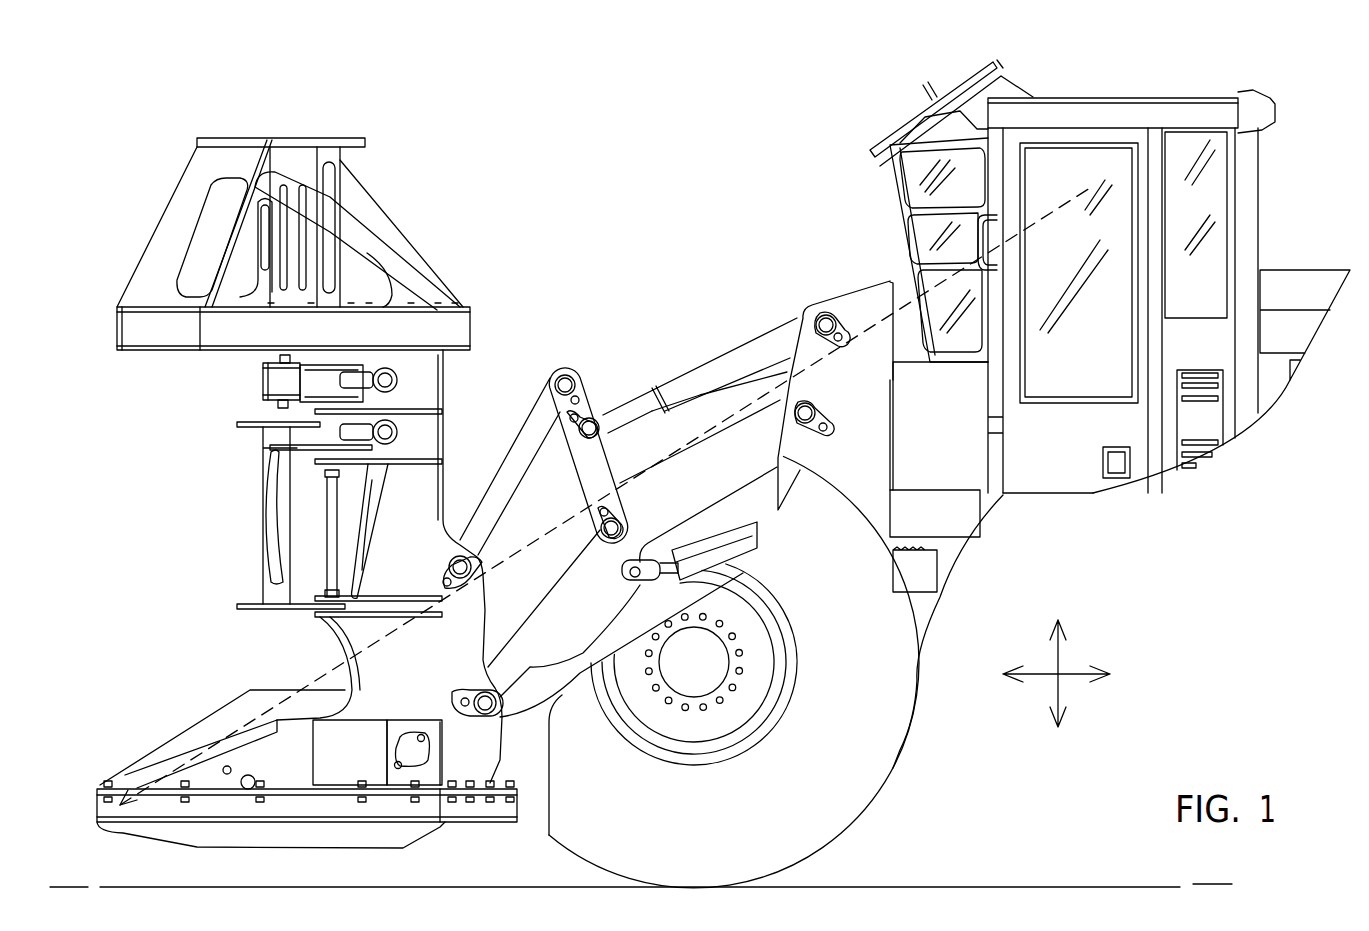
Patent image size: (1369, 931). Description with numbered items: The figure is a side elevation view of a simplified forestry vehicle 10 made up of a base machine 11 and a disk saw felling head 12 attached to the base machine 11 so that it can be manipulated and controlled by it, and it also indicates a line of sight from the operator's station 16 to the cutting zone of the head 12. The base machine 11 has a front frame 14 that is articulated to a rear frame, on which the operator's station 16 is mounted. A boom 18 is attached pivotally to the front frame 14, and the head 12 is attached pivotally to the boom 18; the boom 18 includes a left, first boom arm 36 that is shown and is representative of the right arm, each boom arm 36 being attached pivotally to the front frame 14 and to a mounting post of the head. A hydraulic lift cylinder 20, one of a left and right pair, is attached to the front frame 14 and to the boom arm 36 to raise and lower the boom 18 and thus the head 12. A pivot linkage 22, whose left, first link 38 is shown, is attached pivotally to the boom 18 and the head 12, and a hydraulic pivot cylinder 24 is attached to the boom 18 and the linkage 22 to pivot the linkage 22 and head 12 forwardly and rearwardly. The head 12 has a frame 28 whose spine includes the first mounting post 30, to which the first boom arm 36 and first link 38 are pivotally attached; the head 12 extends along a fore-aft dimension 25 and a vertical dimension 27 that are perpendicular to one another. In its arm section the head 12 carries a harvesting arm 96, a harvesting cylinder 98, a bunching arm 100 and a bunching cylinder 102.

The forestry vehicle 10 is at (526, 148).
The base machine 11 is at (685, 160).
The disk saw felling head 12 is at (418, 207).
The front frame 14 is at (860, 305).
The operator's station 16 is at (1108, 117).
The boom 18 is at (717, 412).
The hydraulic lift cylinders 20 is at (717, 550).
The pivot linkage 22 is at (553, 360).
The hydraulic pivot cylinders 24 is at (658, 387).
The fore-aft dimension 25 is at (1077, 670).
The vertical dimension 27 is at (1058, 705).
The frame 28 is at (420, 380).
The first mounting post 30 is at (437, 443).
The first boom arm 36 is at (540, 705).
The first link 38 is at (498, 505).
The harvesting arm 96 is at (263, 535).
The harvesting cylinder 98 is at (367, 488).
The bunching arm 100 is at (263, 375).
The bunching cylinder 102 is at (374, 377).